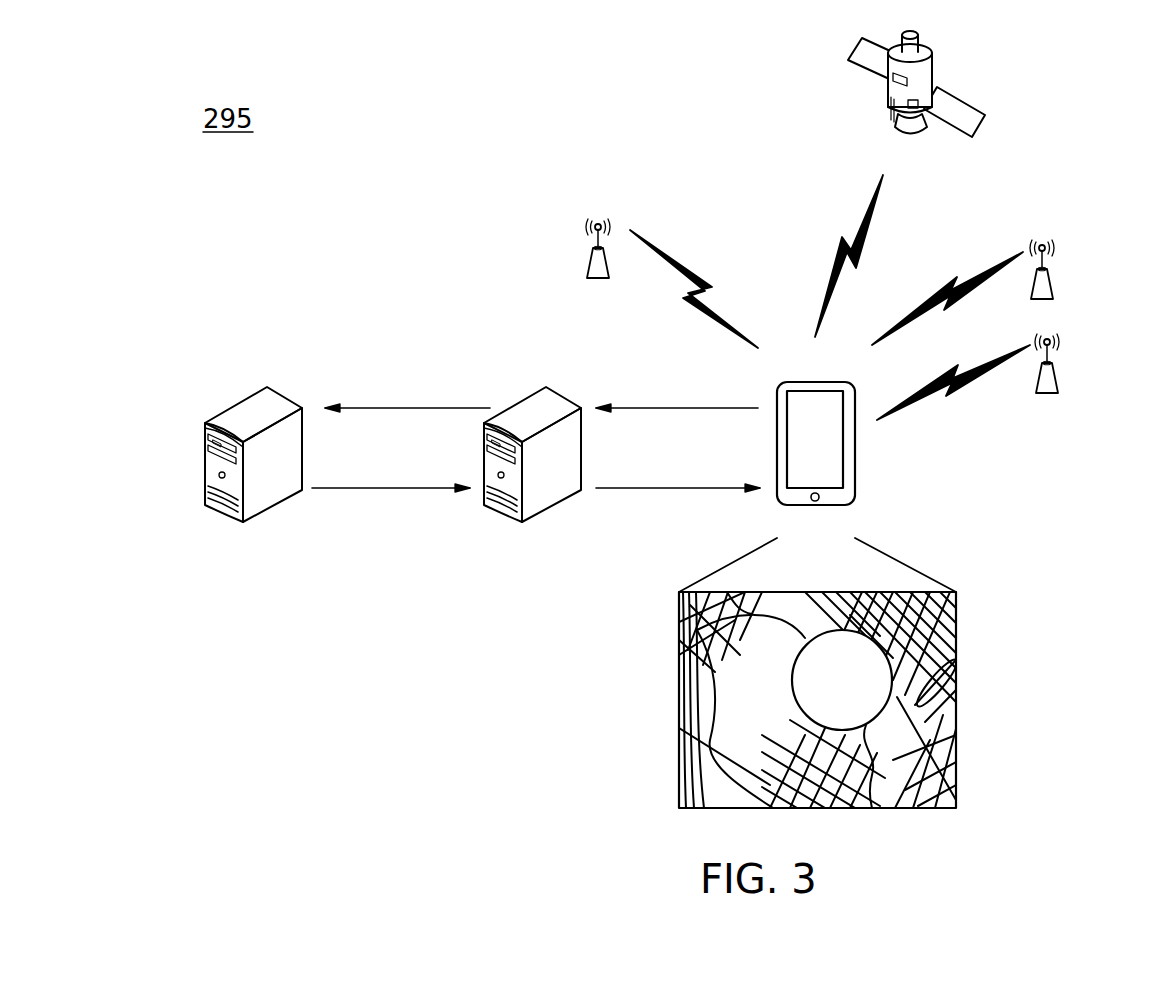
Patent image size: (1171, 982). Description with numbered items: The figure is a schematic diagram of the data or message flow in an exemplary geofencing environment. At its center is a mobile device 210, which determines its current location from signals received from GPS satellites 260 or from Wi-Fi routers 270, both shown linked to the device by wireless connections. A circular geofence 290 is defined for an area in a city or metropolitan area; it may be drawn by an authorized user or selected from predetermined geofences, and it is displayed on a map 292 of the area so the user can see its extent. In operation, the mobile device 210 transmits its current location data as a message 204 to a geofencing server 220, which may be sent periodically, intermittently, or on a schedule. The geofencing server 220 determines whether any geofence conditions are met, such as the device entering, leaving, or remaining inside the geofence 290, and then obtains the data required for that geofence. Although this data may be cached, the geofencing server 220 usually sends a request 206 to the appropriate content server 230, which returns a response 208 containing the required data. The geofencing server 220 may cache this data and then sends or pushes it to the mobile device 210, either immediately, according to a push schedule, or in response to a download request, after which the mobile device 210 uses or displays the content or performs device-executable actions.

The GPS satellite 260 is at (932, 62).
The Wi-Fi router 270 is at (590, 262).
The mobile device 210 is at (855, 488).
The geofencing server 220 is at (550, 507).
The content server 230 is at (271, 507).
The message 204 is at (686, 407).
The request 206 is at (411, 407).
The response 208 is at (388, 490).
The map 292 is at (679, 698).
The geofence 290 is at (865, 720).